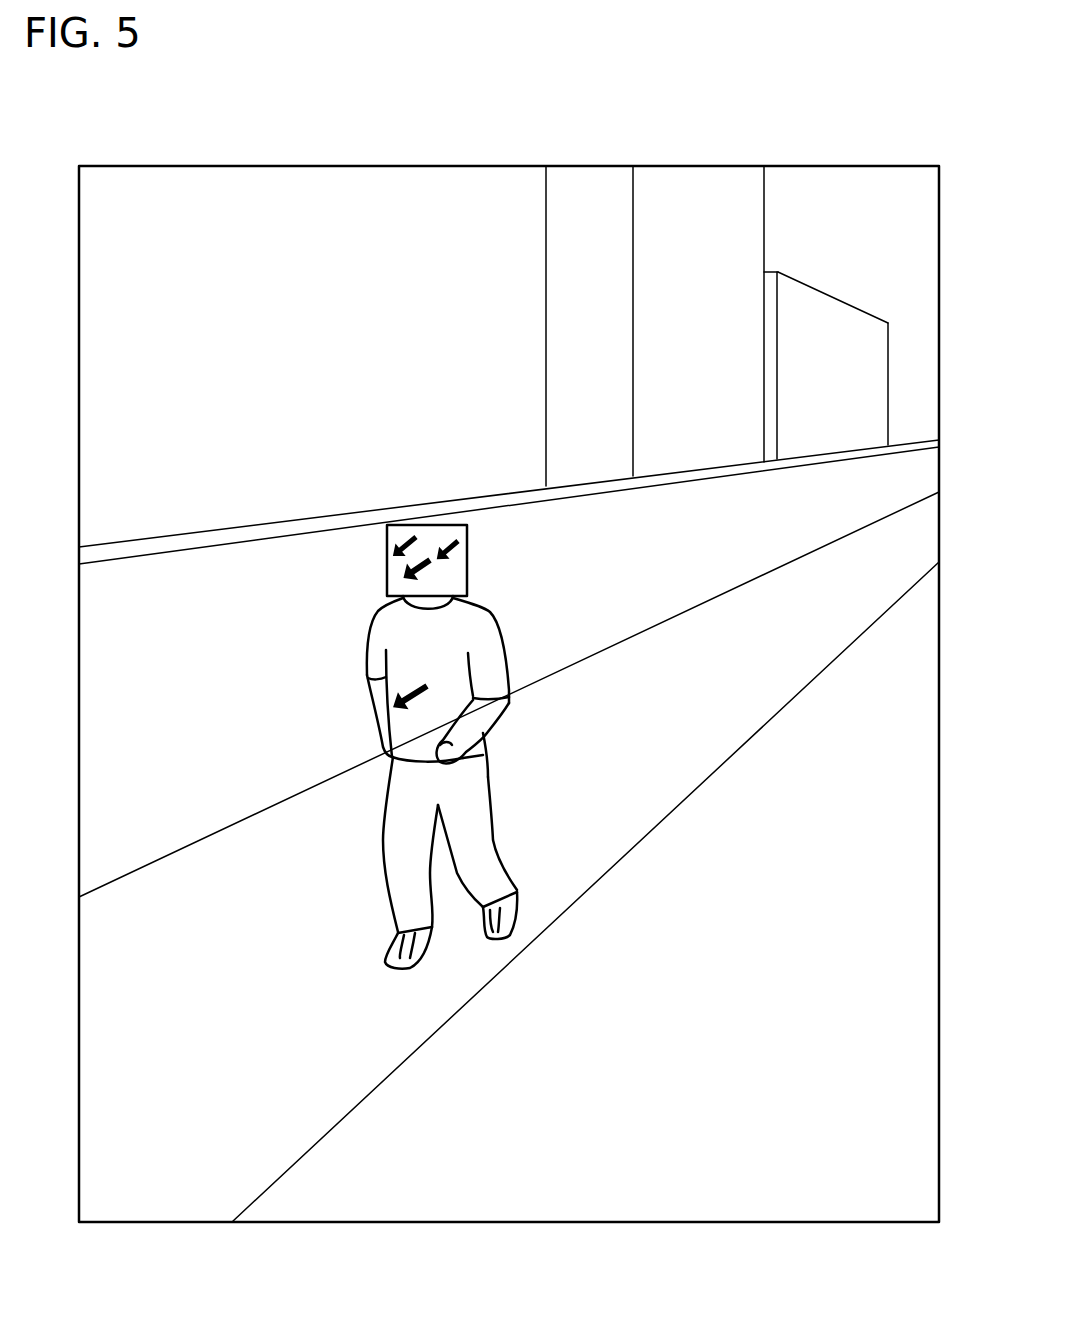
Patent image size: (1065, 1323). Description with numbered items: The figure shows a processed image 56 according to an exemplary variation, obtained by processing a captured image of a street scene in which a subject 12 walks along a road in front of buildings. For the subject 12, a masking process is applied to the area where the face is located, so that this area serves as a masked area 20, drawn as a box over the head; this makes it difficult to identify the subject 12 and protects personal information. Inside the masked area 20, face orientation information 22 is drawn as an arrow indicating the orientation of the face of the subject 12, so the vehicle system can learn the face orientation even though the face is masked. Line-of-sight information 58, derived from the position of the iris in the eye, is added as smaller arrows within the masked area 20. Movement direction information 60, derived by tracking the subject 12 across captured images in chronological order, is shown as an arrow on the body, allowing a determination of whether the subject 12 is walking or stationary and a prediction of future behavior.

The processed image 56 is at (863, 166).
The subject 12 is at (508, 655).
The masked area 20 is at (467, 562).
The line-of-sight information 58 is at (403, 537).
The face orientation information 22 is at (422, 558).
The movement direction information 60 is at (417, 685).